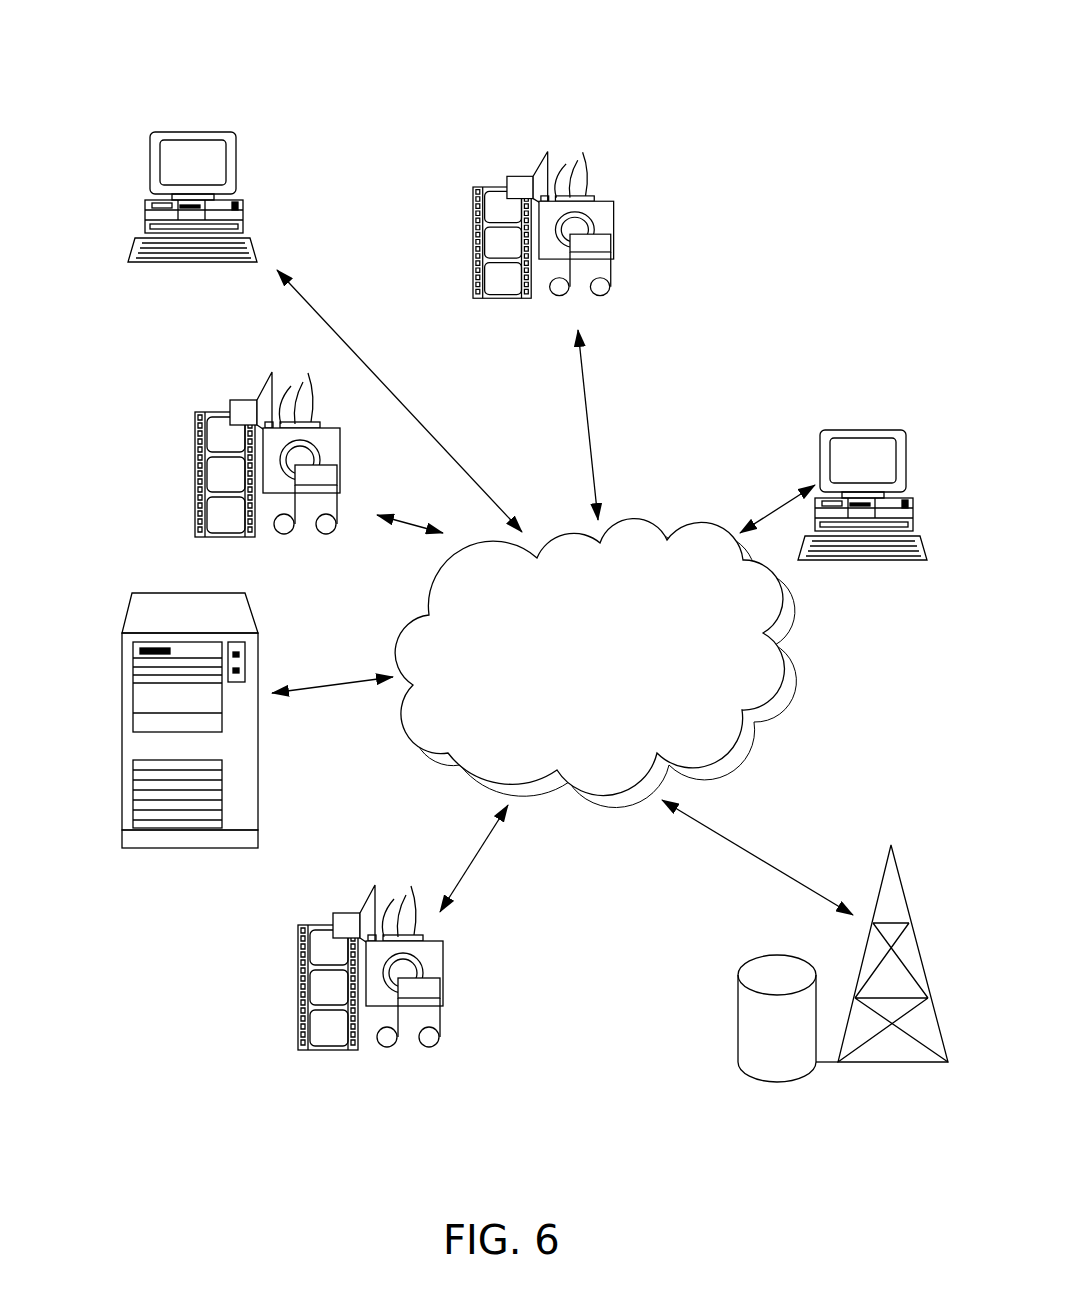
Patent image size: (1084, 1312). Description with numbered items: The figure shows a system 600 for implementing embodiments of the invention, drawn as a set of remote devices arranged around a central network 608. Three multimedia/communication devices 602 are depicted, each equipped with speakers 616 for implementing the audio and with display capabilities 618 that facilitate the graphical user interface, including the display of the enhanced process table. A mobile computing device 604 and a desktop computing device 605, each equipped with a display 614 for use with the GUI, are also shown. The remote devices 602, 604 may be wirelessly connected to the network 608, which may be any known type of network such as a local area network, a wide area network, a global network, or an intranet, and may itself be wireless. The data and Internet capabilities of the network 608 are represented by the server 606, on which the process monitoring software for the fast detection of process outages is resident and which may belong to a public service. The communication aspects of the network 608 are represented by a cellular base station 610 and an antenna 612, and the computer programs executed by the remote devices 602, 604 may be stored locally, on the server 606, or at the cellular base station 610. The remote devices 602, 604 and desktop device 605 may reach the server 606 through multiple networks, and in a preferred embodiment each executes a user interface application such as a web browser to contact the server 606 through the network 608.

The system 600 is at (740, 128).
The multimedia/communication device 602 is at (353, 590).
The mobile computing device 604 is at (876, 479).
The desktop computing device 605 is at (193, 135).
The server 606 is at (180, 848).
The network 608 is at (552, 767).
The cellular base station 610 is at (738, 1034).
The antenna 612 is at (883, 882).
The display 614 is at (237, 101).
The speaker 616 is at (538, 150).
The display capability 618 is at (473, 212).